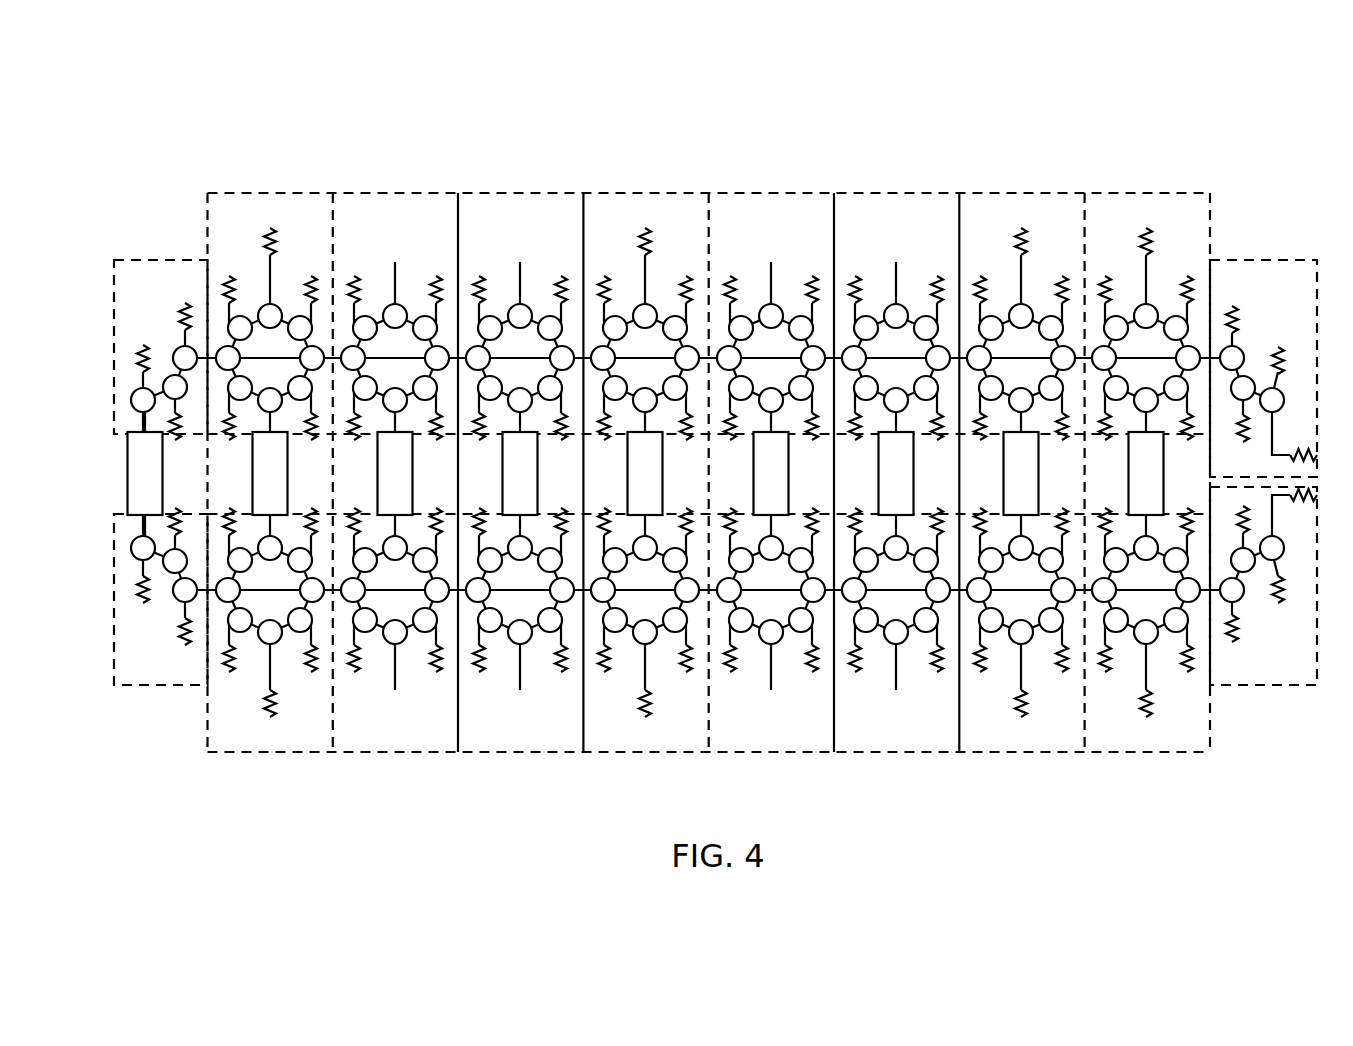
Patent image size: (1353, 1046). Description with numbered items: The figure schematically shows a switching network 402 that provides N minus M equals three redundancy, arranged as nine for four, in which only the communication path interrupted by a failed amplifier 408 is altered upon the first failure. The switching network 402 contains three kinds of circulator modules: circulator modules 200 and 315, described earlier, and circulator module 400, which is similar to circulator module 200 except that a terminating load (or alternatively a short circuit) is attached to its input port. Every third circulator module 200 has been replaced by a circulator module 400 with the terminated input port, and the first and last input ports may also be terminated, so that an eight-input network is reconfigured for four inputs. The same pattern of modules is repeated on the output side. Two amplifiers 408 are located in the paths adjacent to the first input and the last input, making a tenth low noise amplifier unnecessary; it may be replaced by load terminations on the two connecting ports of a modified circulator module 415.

The switching network 402 is at (1201, 110).
The circulator module 400 is at (708, 474).
The circulator module 200 is at (645, 474).
The circulator module 315 is at (165, 475).
The modified circulator module 415 is at (1258, 475).
The amplifier 408 is at (607, 474).